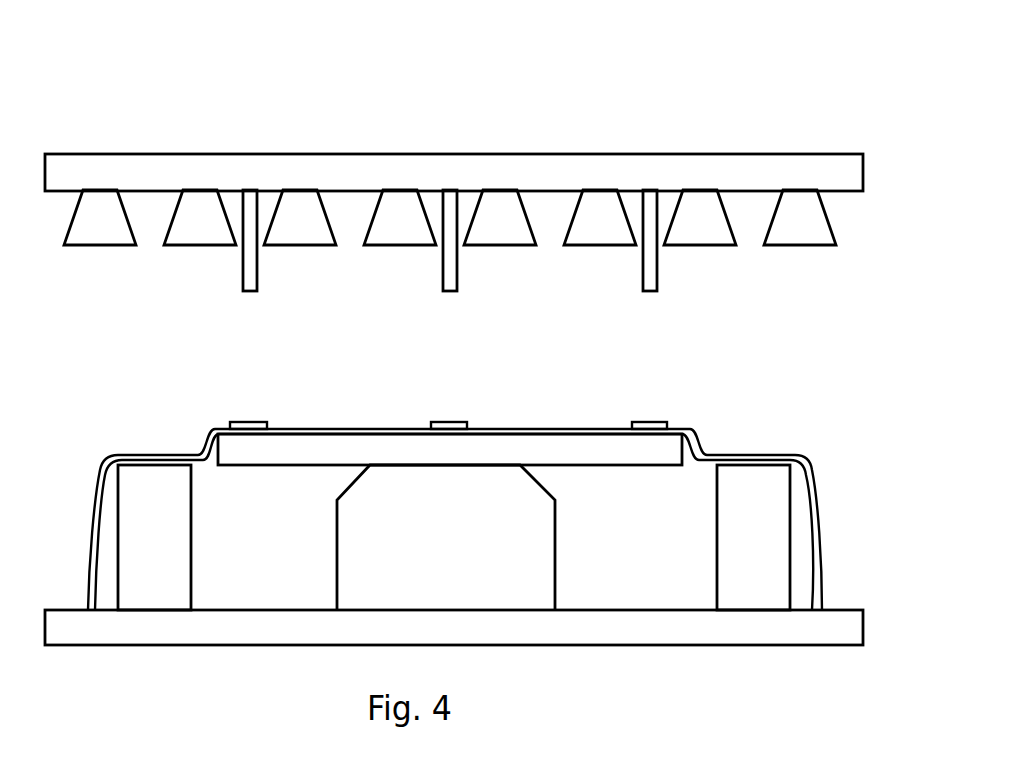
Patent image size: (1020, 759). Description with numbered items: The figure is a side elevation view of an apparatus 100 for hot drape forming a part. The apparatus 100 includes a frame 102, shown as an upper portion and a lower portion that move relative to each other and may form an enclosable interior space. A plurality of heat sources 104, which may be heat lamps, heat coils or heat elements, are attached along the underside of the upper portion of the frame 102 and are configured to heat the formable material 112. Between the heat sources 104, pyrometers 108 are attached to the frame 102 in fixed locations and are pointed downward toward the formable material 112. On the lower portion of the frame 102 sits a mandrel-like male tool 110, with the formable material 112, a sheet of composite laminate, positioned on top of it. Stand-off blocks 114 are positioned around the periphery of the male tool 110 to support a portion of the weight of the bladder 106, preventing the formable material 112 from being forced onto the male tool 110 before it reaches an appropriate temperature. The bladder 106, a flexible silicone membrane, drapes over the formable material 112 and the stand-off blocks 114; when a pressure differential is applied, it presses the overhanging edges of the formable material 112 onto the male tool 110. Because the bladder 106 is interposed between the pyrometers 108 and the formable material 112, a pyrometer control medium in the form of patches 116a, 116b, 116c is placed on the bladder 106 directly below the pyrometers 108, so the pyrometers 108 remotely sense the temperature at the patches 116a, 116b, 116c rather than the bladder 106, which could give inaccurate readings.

The apparatus 100 is at (772, 76).
The frame 102 is at (418, 158).
The heat sources 104 is at (98, 218).
The bladder 106 is at (88, 538).
The pyrometers 108 is at (250, 225).
The male tool 110 is at (482, 527).
The formable material 112 is at (610, 445).
The stand-off blocks 114 is at (132, 488).
The patch 116a is at (248, 422).
The patch 116b is at (453, 422).
The patch 116c is at (653, 422).